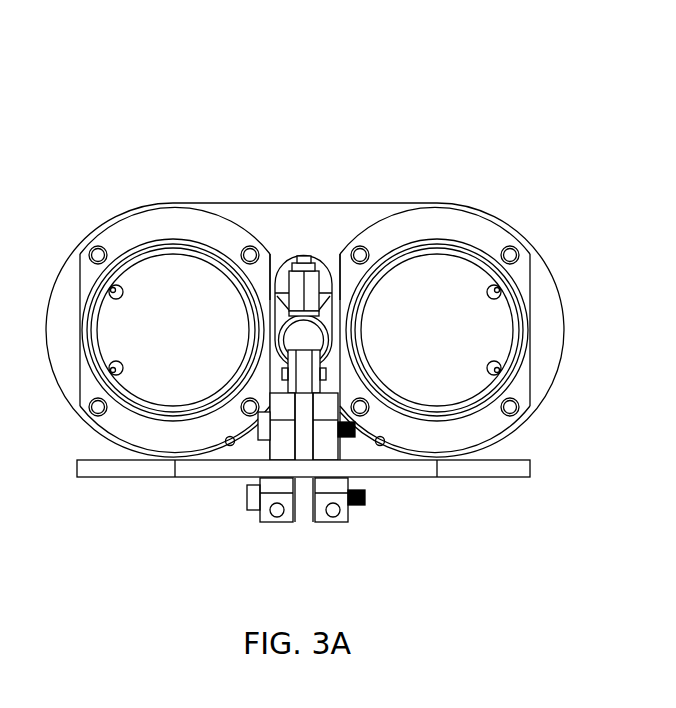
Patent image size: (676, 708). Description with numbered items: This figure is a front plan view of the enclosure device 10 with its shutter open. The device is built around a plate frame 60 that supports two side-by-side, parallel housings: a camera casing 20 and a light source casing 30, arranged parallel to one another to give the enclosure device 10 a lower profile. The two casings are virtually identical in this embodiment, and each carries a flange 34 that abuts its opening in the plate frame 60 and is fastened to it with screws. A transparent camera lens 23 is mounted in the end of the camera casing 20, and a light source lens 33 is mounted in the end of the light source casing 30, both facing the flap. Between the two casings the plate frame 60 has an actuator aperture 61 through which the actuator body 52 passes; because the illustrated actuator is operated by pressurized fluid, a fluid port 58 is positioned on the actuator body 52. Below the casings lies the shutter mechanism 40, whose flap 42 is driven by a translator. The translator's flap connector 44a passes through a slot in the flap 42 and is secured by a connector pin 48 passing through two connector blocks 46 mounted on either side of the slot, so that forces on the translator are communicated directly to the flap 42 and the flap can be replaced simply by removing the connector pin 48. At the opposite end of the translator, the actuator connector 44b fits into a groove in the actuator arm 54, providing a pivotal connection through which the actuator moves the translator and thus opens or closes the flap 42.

The enclosure device 10 is at (398, 125).
The camera casing 20 is at (159, 310).
The camera lens 23 is at (189, 343).
The light source casing 30 is at (435, 290).
The light source lens 33 is at (453, 343).
The flange 34 is at (152, 225).
The shutter mechanism 40 is at (290, 503).
The flap 42 is at (483, 478).
The flap connector 44a is at (305, 507).
The actuator connector 44b is at (307, 367).
The connector block 46 is at (262, 522).
The connector pin 48 is at (244, 500).
The actuator body 52 is at (395, 252).
The actuator arm 54 is at (322, 370).
The fluid port 58 is at (297, 257).
The plate frame 60 is at (335, 223).
The actuator aperture 61 is at (283, 255).